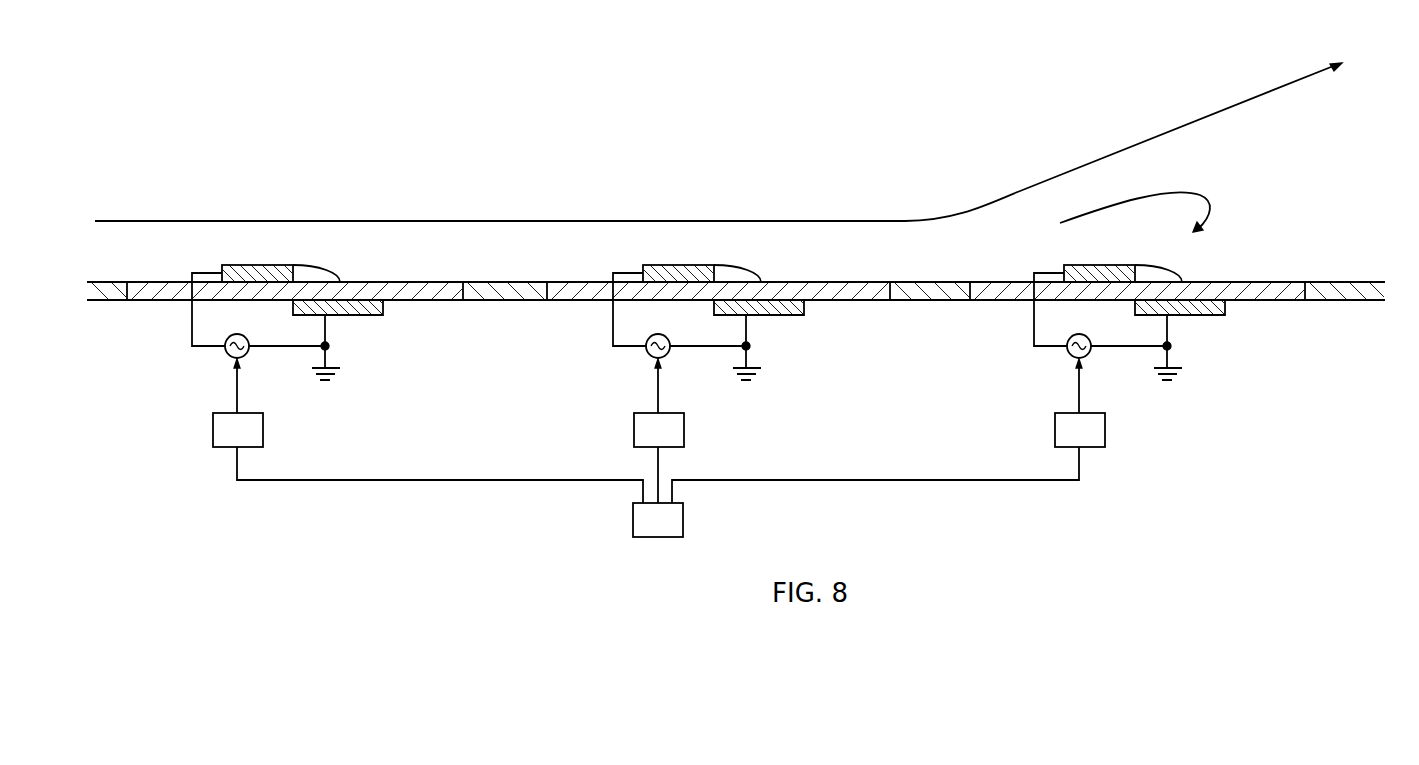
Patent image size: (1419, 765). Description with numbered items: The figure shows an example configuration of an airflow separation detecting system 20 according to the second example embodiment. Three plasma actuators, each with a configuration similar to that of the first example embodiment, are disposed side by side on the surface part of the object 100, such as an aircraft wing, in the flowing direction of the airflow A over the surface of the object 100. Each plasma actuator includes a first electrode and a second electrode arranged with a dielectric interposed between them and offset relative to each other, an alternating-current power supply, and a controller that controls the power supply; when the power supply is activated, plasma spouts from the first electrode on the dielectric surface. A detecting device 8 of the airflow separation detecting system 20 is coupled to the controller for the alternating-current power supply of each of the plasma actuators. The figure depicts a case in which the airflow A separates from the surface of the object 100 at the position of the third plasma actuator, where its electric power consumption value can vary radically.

The detecting device 8 is at (687, 517).
The airflow separation detecting system 20 is at (899, 495).
The object 100 is at (507, 283).
The airflow A is at (718, 147).